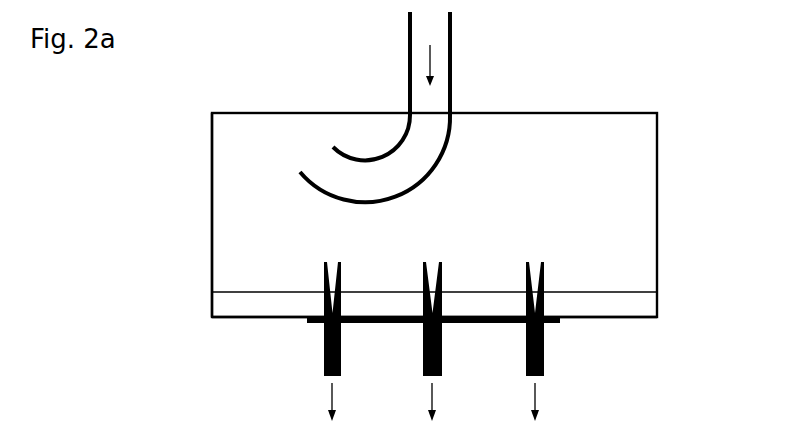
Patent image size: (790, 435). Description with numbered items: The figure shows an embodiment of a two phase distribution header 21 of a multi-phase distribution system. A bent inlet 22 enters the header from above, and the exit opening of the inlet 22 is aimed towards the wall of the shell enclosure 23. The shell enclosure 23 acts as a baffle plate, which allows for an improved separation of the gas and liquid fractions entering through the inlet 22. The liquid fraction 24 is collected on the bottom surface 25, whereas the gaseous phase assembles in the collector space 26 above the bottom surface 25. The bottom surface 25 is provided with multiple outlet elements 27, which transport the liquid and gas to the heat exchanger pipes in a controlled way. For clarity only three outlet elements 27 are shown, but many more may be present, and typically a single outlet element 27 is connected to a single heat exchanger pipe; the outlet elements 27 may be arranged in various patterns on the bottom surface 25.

The two phase distribution header 21 is at (284, 70).
The inlet 22 is at (410, 62).
The shell enclosure 23 is at (211, 150).
The liquid fraction 24 is at (247, 303).
The bottom surface 25 is at (218, 318).
The collector space 26 is at (448, 228).
The outlet elements 27 is at (325, 355).